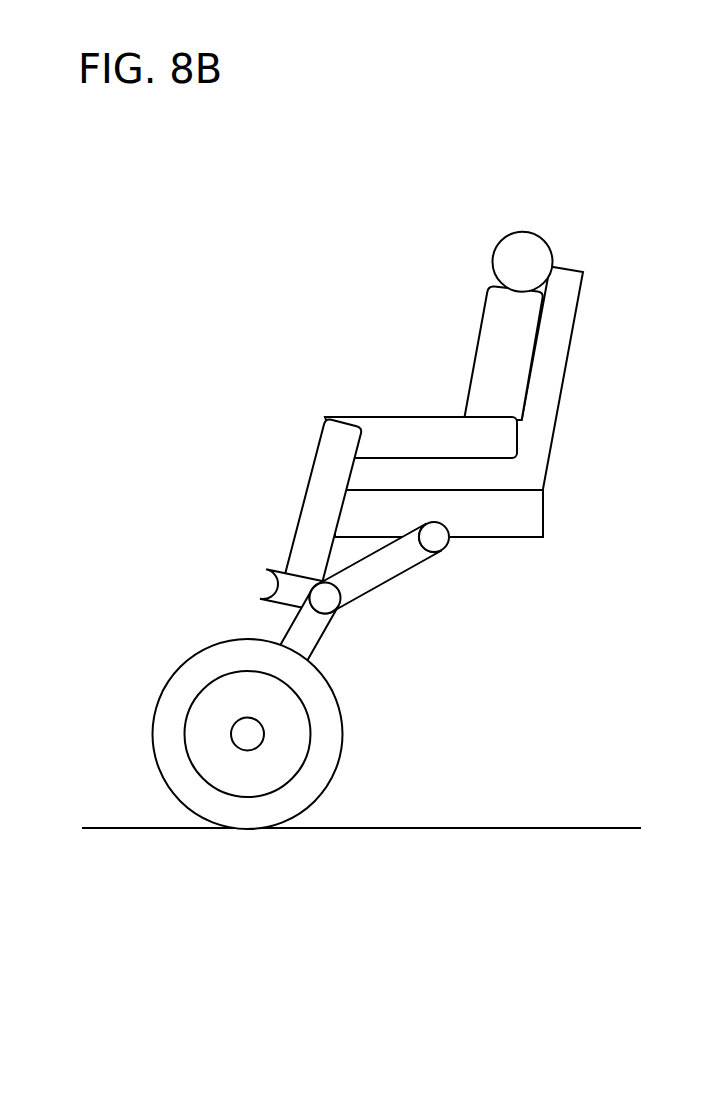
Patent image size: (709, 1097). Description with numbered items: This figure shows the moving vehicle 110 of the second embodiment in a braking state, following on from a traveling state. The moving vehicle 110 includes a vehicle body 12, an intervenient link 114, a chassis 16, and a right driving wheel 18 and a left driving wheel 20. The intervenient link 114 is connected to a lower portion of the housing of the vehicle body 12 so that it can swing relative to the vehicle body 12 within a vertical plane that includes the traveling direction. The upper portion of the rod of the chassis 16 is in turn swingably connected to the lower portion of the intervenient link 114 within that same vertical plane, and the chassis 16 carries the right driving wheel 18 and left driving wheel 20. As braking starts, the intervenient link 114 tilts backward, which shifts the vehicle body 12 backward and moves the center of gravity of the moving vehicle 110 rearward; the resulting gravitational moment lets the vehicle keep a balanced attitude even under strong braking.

The moving vehicle 110 is at (423, 192).
The vehicle body 12 is at (558, 481).
The intervenient link 114 is at (409, 570).
The chassis 16 is at (323, 635).
The right driving wheel 18 is at (299, 734).
The left driving wheel 20 is at (342, 734).